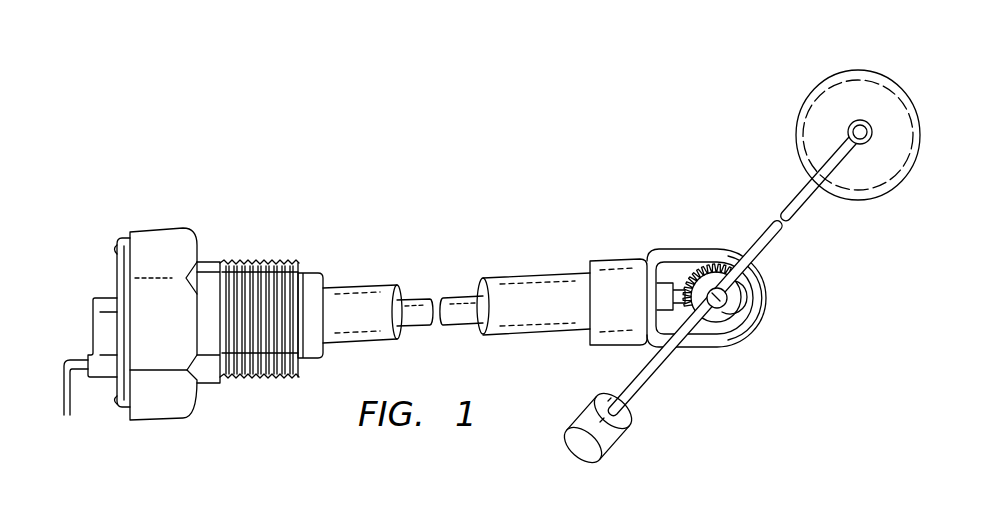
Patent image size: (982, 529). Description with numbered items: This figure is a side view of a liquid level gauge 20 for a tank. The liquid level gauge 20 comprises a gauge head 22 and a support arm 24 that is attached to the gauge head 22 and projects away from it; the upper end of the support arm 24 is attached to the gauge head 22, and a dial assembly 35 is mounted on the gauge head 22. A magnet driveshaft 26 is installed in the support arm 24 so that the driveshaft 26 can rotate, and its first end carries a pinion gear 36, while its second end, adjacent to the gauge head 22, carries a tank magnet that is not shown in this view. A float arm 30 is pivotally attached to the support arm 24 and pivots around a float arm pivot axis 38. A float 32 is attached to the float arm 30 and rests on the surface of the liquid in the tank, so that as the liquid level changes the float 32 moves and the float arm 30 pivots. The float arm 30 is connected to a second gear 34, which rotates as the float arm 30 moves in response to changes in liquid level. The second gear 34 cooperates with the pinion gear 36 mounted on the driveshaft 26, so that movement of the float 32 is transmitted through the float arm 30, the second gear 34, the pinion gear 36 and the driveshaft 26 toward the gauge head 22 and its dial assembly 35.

The liquid level gauge 20 is at (424, 190).
The gauge head 22 is at (253, 248).
The support arm 24 is at (352, 286).
The magnet driveshaft 26 is at (419, 299).
The float arm 30 is at (772, 247).
The float 32 is at (921, 138).
The second gear 34 is at (699, 256).
The dial assembly 35 is at (98, 273).
The pinion gear 36 is at (684, 268).
The float arm pivot axis 38 is at (741, 332).